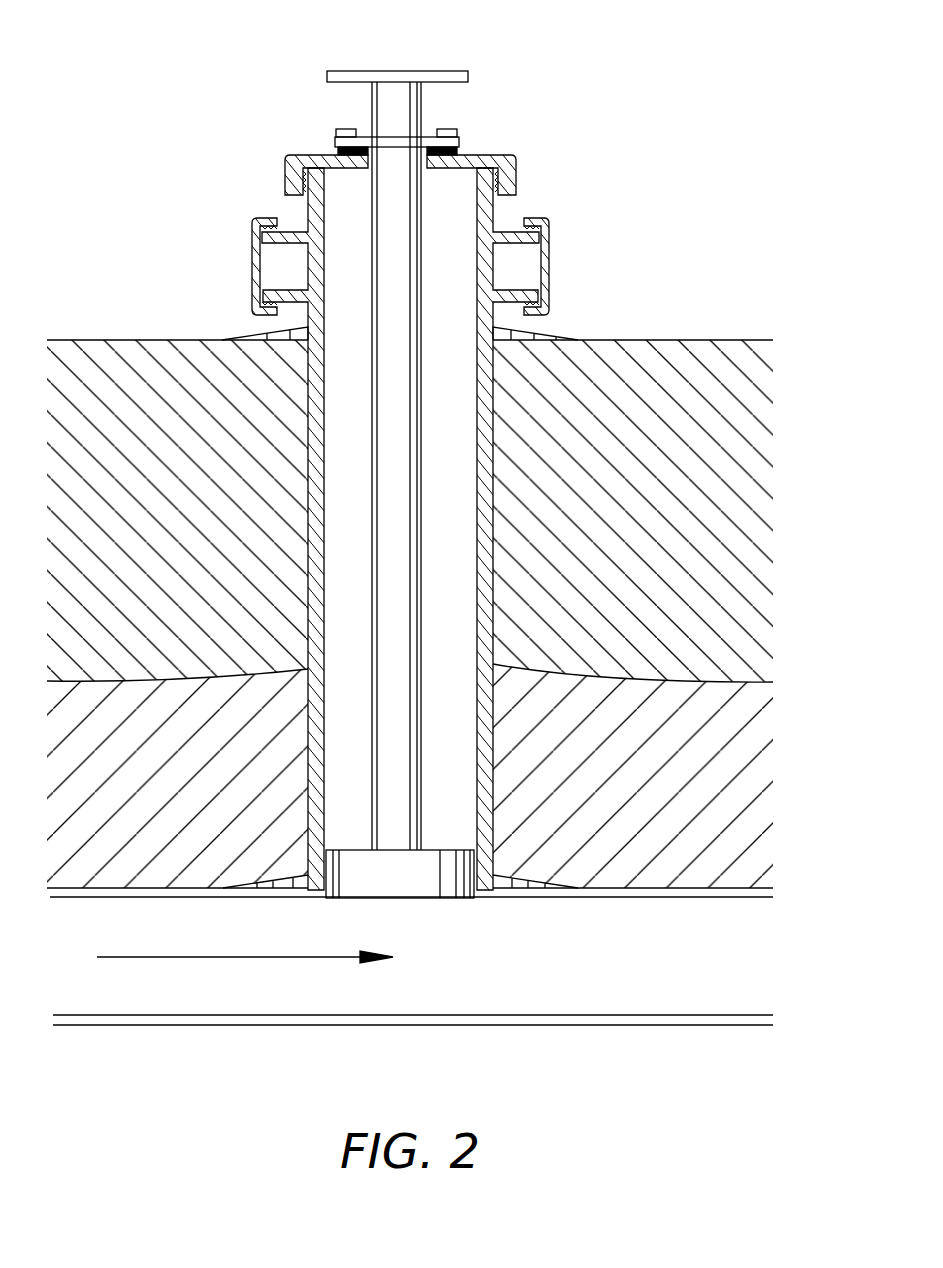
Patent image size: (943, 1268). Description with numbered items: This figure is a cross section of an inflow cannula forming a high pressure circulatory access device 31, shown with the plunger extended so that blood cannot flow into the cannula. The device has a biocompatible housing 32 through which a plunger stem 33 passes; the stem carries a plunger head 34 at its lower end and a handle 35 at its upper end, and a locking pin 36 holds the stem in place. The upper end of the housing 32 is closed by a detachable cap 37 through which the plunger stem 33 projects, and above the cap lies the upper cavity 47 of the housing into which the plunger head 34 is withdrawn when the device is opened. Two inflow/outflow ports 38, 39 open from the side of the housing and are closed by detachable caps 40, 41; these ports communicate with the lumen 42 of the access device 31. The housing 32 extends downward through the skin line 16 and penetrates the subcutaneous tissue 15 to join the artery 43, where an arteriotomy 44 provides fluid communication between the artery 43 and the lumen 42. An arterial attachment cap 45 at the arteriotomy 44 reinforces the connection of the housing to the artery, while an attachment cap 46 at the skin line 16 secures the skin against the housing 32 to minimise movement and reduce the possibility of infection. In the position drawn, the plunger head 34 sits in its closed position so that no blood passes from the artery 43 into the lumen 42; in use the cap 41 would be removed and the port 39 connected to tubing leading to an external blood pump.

The subcutaneous tissue 15 is at (83, 397).
The skin line 16 is at (123, 342).
The high pressure circulatory access device 31 is at (447, 488).
The housing 32 is at (487, 562).
The plunger stem 33 is at (382, 99).
The plunger head 34 is at (420, 885).
The handle 35 is at (443, 78).
The locking pin 36 is at (463, 142).
The detachable cap 37 is at (513, 177).
The inflow/outflow port 38 is at (293, 232).
The inflow/outflow port 39 is at (502, 230).
The detachable cap 40 is at (250, 270).
The detachable cap 41 is at (555, 265).
The lumen 42 is at (460, 432).
The artery 43 is at (228, 1005).
The arteriotomy 44 is at (480, 897).
The arterial attachment cap 45 is at (537, 882).
The attachment cap 46 is at (542, 340).
The upper cavity 47 is at (340, 190).